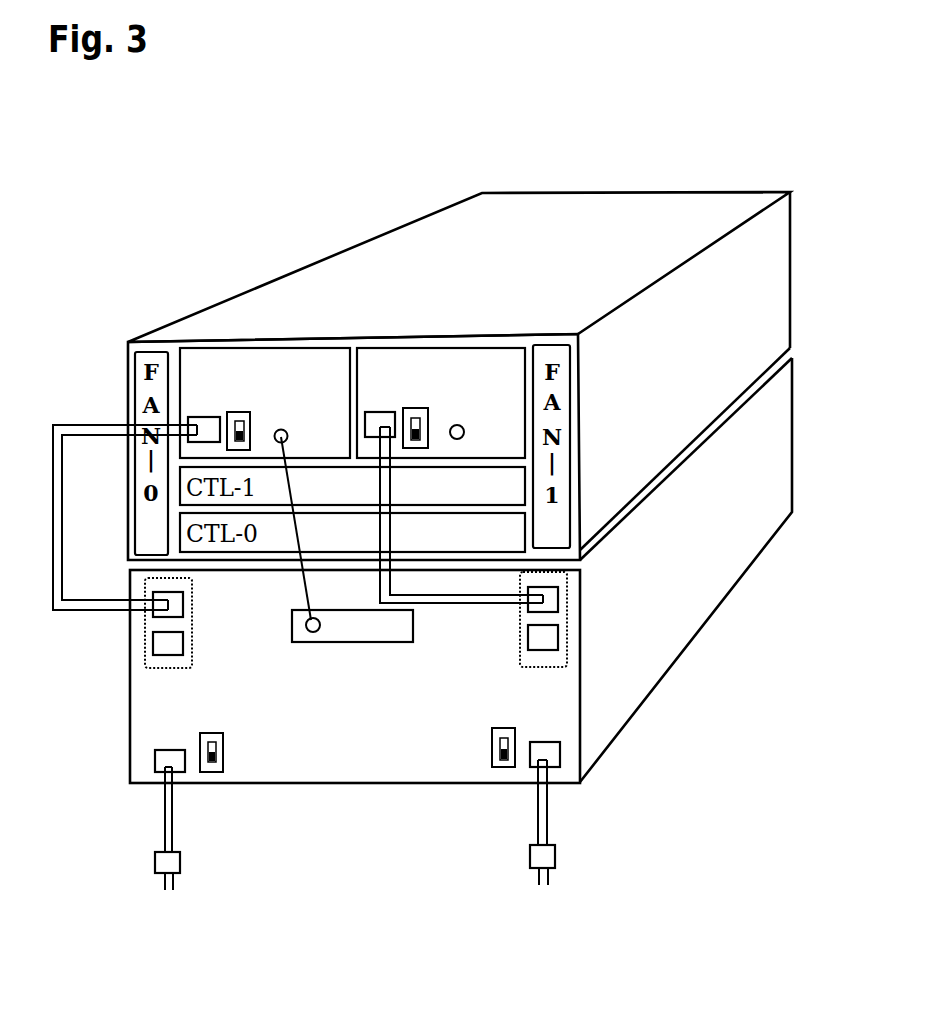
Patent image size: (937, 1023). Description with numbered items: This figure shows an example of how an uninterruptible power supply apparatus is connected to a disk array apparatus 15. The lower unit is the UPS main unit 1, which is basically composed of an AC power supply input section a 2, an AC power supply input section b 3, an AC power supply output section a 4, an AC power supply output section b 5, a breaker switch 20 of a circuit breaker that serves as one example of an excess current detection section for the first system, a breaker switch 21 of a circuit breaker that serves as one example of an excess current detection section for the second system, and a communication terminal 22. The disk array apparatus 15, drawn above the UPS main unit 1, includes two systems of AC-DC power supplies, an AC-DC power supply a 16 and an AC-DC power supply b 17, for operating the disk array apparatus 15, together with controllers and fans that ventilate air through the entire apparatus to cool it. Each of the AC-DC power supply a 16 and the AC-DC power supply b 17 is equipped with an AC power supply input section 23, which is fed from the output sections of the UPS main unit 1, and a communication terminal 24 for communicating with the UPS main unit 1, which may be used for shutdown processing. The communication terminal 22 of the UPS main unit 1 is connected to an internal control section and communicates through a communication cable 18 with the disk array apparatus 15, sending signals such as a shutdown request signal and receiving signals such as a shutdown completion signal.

The UPS main unit 1 is at (487, 487).
The AC power supply input section a 2 is at (155, 760).
The AC power supply input section b 3 is at (562, 760).
The AC power supply output section a 4 is at (146, 640).
The AC power supply output section b 5 is at (567, 612).
The disk array apparatus 15 is at (773, 288).
The AC-DC power supply a 16 is at (248, 350).
The AC-DC power supply b 17 is at (382, 347).
The communication cable 18 is at (300, 572).
The breaker switch 20 is at (207, 772).
The breaker switch 21 is at (497, 767).
The communication terminal 22 is at (310, 632).
The AC power supply input section 23 is at (210, 436).
The communication terminal 24 is at (286, 431).